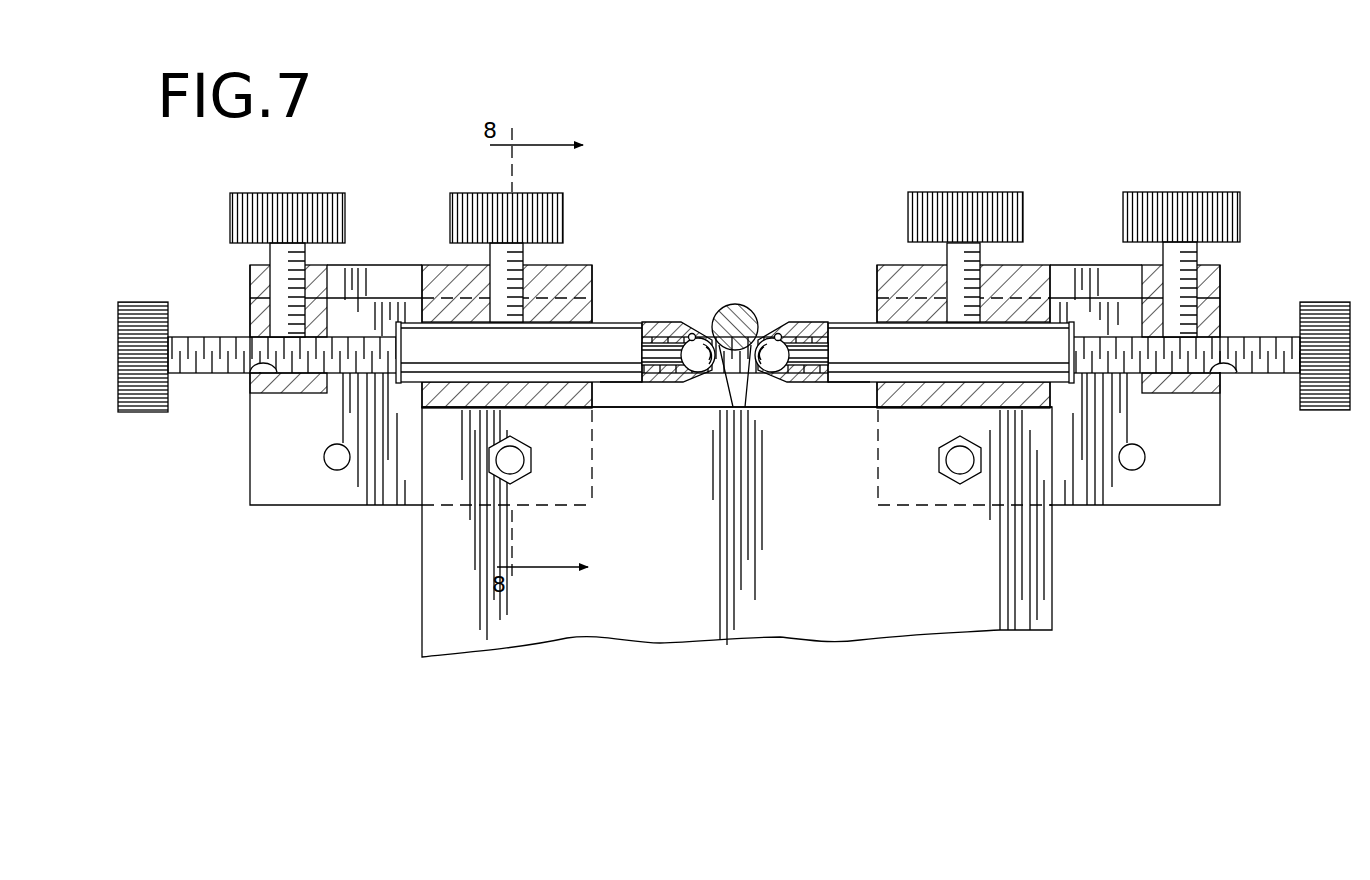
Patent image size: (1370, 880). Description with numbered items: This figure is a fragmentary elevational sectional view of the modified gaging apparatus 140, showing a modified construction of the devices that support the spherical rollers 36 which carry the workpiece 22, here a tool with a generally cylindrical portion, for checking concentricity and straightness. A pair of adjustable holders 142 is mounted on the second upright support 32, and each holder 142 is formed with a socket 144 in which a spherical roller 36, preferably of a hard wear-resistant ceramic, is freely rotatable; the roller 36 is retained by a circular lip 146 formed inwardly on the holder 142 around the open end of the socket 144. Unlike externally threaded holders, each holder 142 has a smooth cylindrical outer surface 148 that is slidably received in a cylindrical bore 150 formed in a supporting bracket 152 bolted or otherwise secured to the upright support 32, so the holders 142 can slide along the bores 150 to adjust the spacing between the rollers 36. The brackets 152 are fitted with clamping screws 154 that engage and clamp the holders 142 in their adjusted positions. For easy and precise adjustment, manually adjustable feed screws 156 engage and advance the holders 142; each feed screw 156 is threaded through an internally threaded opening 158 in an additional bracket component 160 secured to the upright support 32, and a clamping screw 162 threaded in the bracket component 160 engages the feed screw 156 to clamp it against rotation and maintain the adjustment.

The workpiece 22 is at (735, 304).
The second upright support 32 is at (1053, 592).
The spherical roller 36 is at (738, 409).
The modified gaging apparatus 140 is at (734, 315).
The adjustable holder 142 is at (662, 320).
The socket 144 is at (695, 334).
The circular lip 146 is at (694, 373).
The smooth cylindrical outer surface 148 is at (613, 385).
The cylindrical bore 150 is at (594, 330).
The supporting bracket 152 is at (430, 265).
The clamping screw 154 is at (543, 193).
The feed screw 156 is at (232, 375).
The internally threaded opening 158 is at (250, 382).
The additional bracket component 160 is at (250, 290).
The clamping screw 162 is at (297, 193).